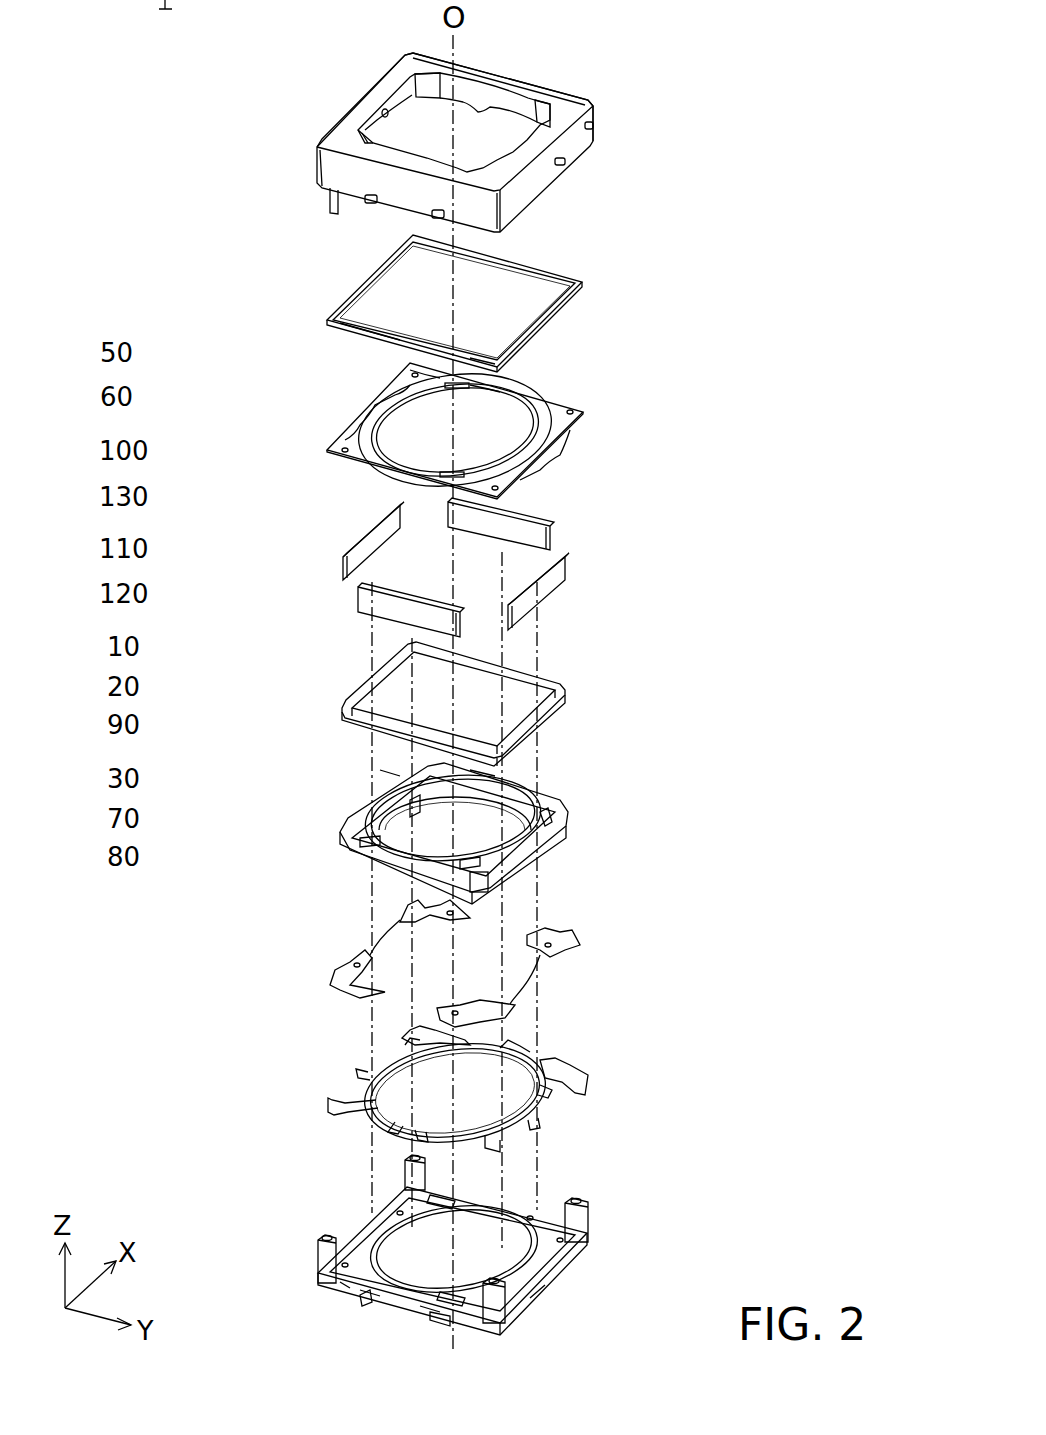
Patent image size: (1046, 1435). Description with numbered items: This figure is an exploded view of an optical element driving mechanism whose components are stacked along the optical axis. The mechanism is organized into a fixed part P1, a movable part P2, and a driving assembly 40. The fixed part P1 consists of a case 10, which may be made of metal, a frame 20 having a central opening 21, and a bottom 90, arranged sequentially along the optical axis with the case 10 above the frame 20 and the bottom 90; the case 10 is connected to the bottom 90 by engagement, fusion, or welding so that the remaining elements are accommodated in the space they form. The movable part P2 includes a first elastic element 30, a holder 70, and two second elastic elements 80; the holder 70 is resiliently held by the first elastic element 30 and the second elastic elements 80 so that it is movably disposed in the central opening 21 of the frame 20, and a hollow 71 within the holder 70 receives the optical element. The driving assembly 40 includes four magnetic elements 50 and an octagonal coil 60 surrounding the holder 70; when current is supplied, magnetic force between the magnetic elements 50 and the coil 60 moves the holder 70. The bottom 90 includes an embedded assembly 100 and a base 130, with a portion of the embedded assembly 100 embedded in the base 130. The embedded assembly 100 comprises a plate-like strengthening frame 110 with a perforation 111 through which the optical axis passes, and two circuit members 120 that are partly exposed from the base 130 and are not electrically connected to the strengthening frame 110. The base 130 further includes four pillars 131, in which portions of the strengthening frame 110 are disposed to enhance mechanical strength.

The case 10 is at (578, 133).
The frame 20 is at (585, 282).
The central opening 21 is at (508, 297).
The first elastic element 30 is at (580, 410).
The driving assembly 40 is at (97, 336).
The magnetic elements 50 is at (538, 540).
The coil 60 is at (552, 716).
The holder 70 is at (560, 832).
The hollow 71 is at (478, 830).
The second elastic elements 80 is at (578, 952).
The bottom 90 is at (97, 436).
The embedded assembly 100 is at (97, 532).
The strengthening frame 110 is at (362, 1090).
The perforation 111 is at (482, 1098).
The circuit members 120 is at (405, 1038).
The base 130 is at (525, 1272).
The pillars 131 is at (408, 1177).
The fixed part P1 is at (97, 632).
The movable part P2 is at (97, 764).